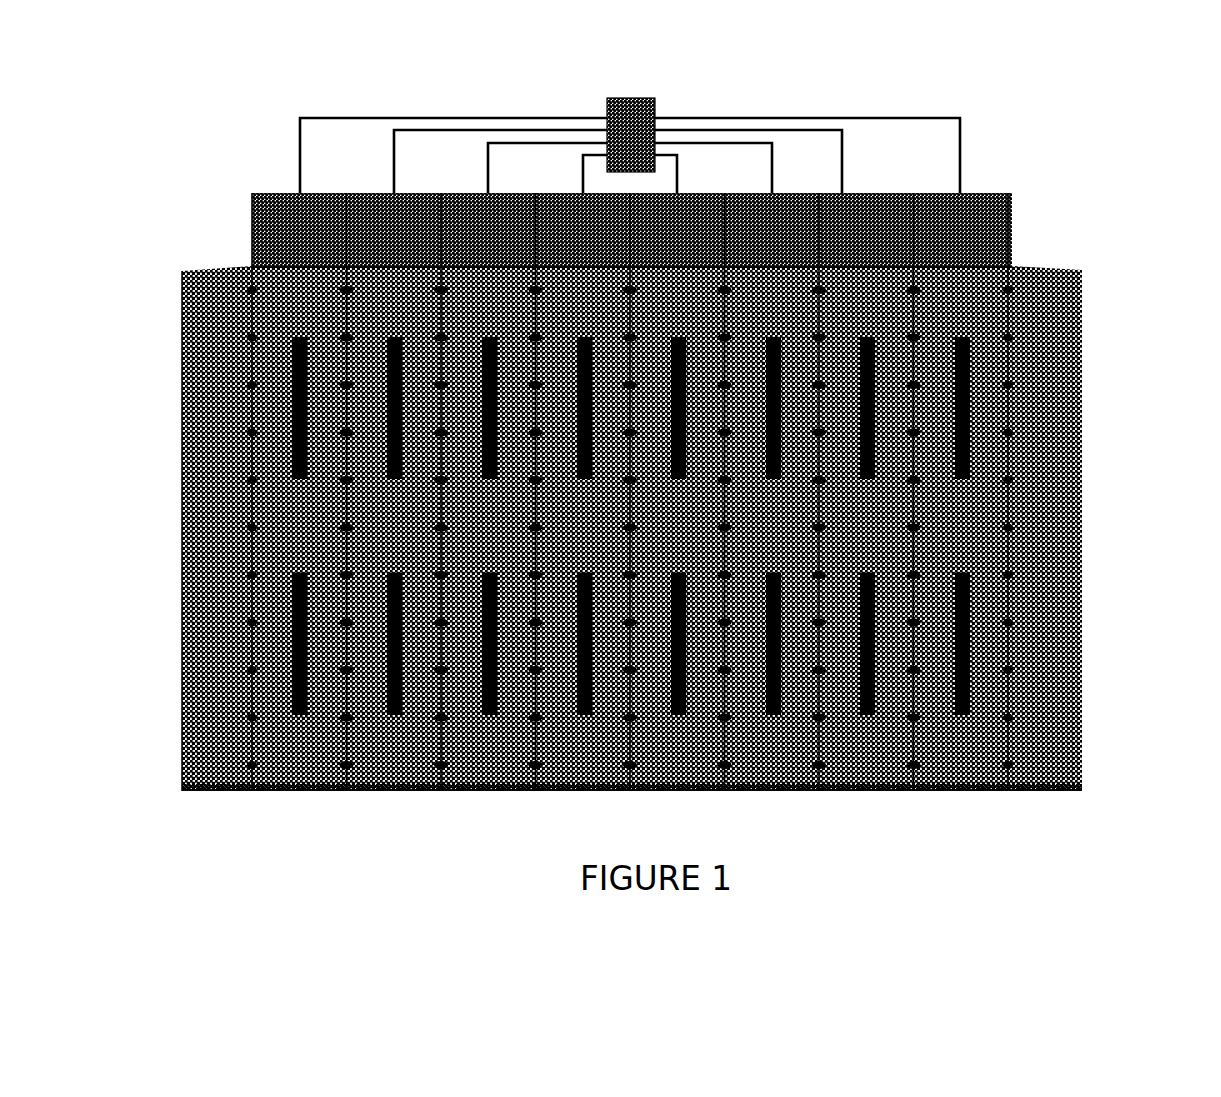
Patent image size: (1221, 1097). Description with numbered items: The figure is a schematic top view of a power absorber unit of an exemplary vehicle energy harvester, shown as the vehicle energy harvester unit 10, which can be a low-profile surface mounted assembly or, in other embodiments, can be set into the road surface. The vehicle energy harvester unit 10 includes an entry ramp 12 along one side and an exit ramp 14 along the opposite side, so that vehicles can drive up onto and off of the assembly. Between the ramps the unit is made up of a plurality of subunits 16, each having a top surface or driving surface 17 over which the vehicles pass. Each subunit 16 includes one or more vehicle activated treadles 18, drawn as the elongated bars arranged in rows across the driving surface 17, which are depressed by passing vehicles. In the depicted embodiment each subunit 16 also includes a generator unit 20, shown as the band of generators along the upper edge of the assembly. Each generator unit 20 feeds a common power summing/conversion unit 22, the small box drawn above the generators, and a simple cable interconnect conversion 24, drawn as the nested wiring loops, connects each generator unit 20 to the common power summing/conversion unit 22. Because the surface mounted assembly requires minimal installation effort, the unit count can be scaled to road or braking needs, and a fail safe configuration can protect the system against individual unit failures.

The vehicle energy harvester unit 10 is at (1161, 779).
The entry ramp 12 is at (1067, 374).
The exit ramp 14 is at (194, 442).
The subunits 16 is at (964, 783).
The top surface or driving surface 17 is at (870, 755).
The vehicle activated treadles 18 is at (298, 715).
The generator unit 20 is at (1000, 220).
The common power summing/conversion unit 22 is at (637, 117).
The cable interconnect conversion 24 is at (912, 118).